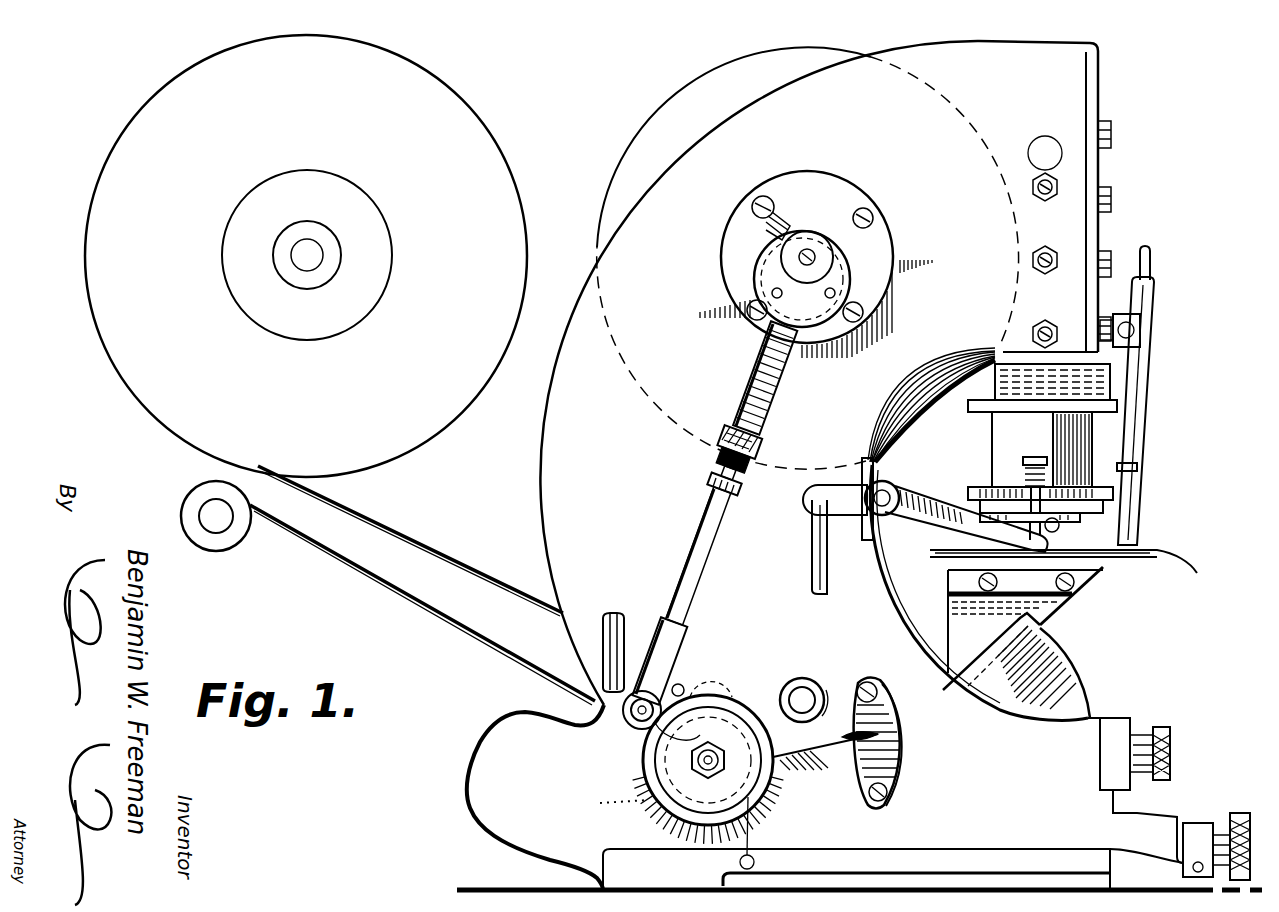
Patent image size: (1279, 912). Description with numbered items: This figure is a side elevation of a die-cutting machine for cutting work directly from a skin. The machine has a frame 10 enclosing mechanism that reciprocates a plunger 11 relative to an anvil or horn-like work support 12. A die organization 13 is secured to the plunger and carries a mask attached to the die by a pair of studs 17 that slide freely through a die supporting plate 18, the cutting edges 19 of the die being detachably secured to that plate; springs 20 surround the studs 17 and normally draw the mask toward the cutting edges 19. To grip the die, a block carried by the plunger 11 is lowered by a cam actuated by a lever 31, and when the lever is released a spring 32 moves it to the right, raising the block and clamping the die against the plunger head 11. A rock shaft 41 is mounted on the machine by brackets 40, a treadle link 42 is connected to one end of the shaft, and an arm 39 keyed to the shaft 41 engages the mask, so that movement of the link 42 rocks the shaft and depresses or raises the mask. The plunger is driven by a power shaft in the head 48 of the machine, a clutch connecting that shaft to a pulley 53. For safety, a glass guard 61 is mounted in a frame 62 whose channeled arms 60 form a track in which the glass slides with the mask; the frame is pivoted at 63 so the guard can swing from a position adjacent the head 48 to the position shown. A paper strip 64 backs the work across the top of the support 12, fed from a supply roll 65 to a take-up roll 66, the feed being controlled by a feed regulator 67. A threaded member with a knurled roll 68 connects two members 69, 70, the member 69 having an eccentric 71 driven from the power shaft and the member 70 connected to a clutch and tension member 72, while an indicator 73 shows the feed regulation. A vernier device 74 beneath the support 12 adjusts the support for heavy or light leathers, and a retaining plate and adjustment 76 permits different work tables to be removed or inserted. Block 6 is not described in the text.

The block 6 is at (997, 622).
The frame 10 is at (566, 495).
The plunger 11 is at (1113, 378).
The work support 12 is at (1097, 587).
The die organization 13 is at (1062, 440).
The studs 17 is at (1057, 524).
The die supporting plate 18 is at (1106, 505).
The cutting edges 19 is at (1084, 518).
The springs 20 is at (1045, 477).
The lever 31 is at (1148, 250).
The spring 32 is at (1150, 285).
The arm 39 is at (870, 558).
The brackets 40 is at (890, 488).
The rock shaft 41 is at (865, 465).
The treadle link 42 is at (808, 566).
The head 48 is at (1065, 96).
The pulley 53 is at (632, 146).
The arms 60 is at (1120, 495).
The glass guard 61 is at (1140, 553).
The frame 62 is at (1120, 408).
The pivot 63 is at (1142, 330).
The paper strip 64 is at (931, 483).
The supply roll 65 is at (152, 106).
The take-up roll 66 is at (205, 482).
The feed regulator 67 is at (710, 498).
The knurled roll 68 is at (705, 435).
The member 69 is at (775, 396).
The member 70 is at (677, 586).
The eccentric 71 is at (842, 268).
The clutch and tension member 72 is at (758, 772).
The indicator 73 is at (903, 752).
The vernier device 74 is at (1255, 802).
The retaining plate and adjustment 76 is at (1162, 728).